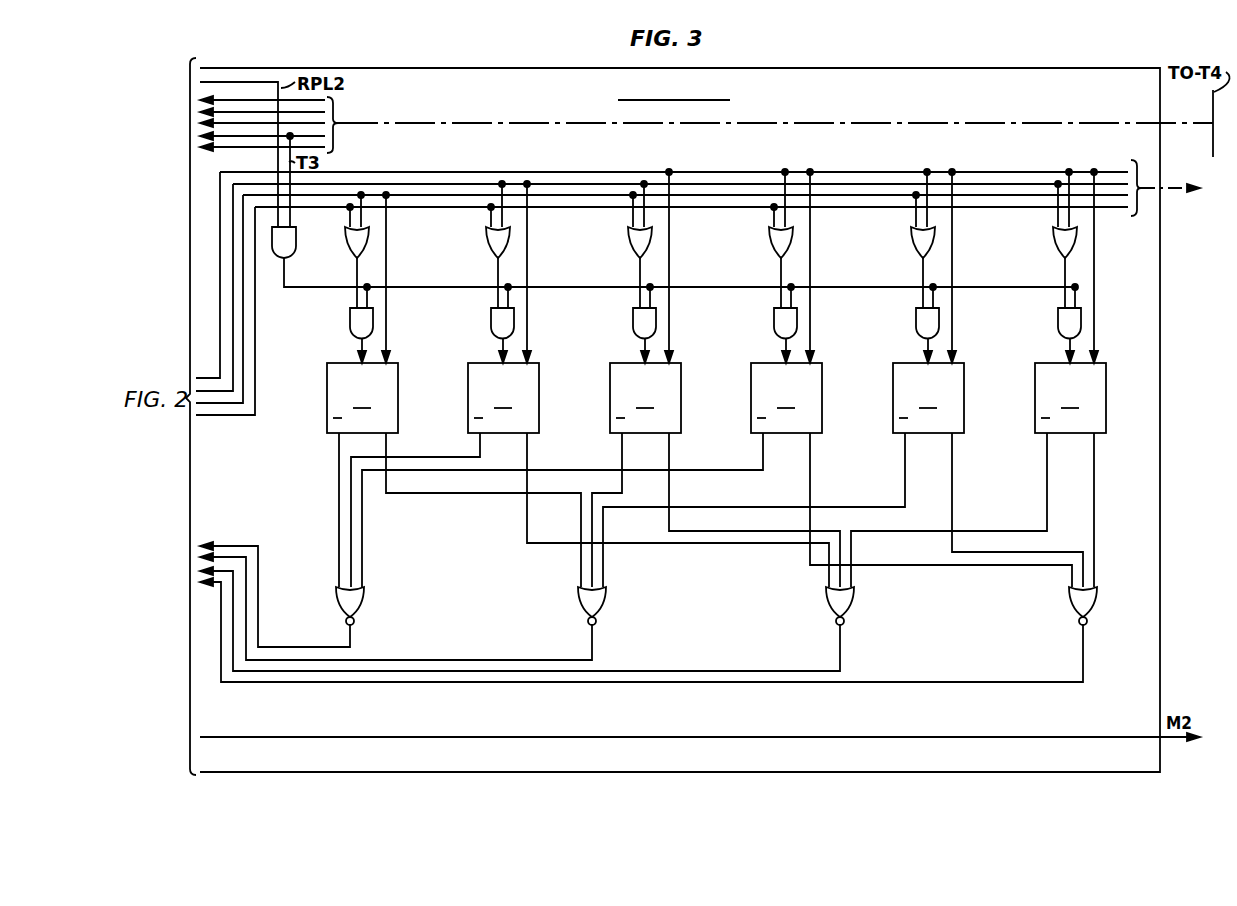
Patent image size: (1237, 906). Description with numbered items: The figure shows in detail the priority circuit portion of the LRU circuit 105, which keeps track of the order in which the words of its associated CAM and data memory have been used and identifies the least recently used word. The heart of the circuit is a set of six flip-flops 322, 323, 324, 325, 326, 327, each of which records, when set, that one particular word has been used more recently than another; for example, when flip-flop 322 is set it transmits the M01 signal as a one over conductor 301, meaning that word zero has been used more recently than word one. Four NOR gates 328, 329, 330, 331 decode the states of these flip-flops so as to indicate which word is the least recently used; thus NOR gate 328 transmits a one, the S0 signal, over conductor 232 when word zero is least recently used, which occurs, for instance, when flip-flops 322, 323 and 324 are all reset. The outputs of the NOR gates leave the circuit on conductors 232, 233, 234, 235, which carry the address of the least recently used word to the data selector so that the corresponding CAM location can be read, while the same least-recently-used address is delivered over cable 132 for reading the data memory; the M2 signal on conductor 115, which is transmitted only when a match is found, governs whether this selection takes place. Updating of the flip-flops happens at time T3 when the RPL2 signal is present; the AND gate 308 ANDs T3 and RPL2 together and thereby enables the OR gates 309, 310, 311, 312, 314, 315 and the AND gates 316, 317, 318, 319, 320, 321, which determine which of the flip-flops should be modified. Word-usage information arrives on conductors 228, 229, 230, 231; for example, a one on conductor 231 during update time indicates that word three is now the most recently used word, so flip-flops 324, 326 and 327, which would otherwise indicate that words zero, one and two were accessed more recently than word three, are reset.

The LRU circuit 105 is at (797, 46).
The conductor 115 is at (1178, 740).
The cable 132 is at (1181, 172).
The conductor 228 is at (457, 150).
The conductor 229 is at (598, 150).
The conductor 230 is at (742, 150).
The conductor 231 is at (861, 204).
The conductor 232 is at (1034, 661).
The conductor 233 is at (759, 651).
The conductor 234 is at (517, 638).
The conductor 235 is at (319, 626).
The conductor 301 is at (1095, 513).
The AND gate 308 is at (292, 258).
The OR gate 309 is at (1052, 240).
The OR gate 310 is at (910, 240).
The OR gate 311 is at (768, 240).
The OR gate 312 is at (627, 240).
The OR gate 314 is at (485, 240).
The OR gate 315 is at (344, 240).
The AND gate 316 is at (1057, 322).
The AND gate 317 is at (915, 322).
The AND gate 318 is at (773, 322).
The AND gate 319 is at (632, 322).
The AND gate 320 is at (490, 322).
The AND gate 321 is at (349, 322).
The flip-flop 322 is at (1034, 398).
The flip-flop 323 is at (892, 398).
The flip-flop 324 is at (750, 398).
The flip-flop 325 is at (609, 398).
The flip-flop 326 is at (467, 398).
The flip-flop 327 is at (326, 398).
The NOR gate 328 is at (1097, 603).
The NOR gate 329 is at (854, 601).
The NOR gate 330 is at (606, 601).
The NOR gate 331 is at (364, 601).